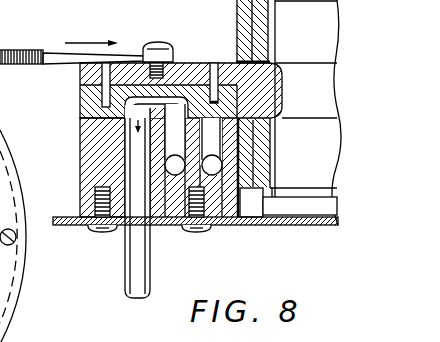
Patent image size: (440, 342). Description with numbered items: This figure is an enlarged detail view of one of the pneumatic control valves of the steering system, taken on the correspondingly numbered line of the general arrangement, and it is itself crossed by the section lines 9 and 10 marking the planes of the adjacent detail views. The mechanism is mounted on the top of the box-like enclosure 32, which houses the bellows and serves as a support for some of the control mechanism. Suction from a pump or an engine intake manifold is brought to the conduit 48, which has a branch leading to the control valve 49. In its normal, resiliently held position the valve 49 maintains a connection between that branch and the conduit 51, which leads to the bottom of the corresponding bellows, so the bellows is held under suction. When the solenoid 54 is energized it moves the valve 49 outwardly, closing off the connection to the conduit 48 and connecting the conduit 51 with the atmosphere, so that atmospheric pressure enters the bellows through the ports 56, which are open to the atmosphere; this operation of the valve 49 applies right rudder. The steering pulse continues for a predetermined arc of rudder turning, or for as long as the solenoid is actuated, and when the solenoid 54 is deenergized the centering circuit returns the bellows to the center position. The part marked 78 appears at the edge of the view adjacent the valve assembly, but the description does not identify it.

The section line 9- 9 is at (77, 163).
The section line 10- 10 is at (213, 53).
The box-like enclosure 32 is at (280, 227).
The conduit 48 is at (125, 257).
The control valve 49 is at (82, 105).
The conduit 51 is at (170, 175).
The solenoid 54 is at (320, 39).
The port 56 is at (213, 175).
The wheel 78 is at (13, 236).